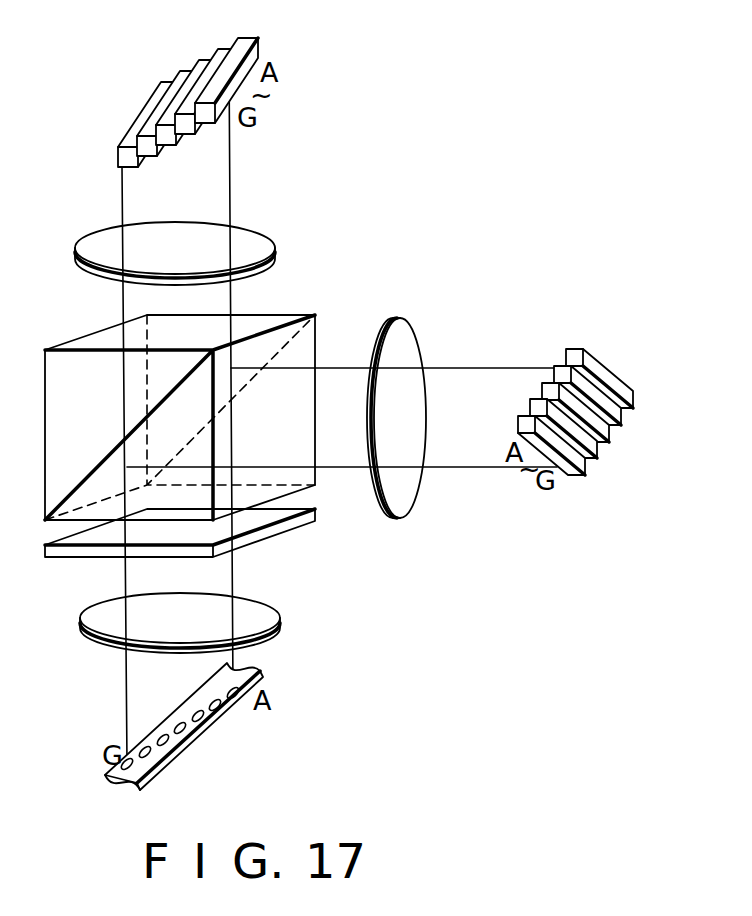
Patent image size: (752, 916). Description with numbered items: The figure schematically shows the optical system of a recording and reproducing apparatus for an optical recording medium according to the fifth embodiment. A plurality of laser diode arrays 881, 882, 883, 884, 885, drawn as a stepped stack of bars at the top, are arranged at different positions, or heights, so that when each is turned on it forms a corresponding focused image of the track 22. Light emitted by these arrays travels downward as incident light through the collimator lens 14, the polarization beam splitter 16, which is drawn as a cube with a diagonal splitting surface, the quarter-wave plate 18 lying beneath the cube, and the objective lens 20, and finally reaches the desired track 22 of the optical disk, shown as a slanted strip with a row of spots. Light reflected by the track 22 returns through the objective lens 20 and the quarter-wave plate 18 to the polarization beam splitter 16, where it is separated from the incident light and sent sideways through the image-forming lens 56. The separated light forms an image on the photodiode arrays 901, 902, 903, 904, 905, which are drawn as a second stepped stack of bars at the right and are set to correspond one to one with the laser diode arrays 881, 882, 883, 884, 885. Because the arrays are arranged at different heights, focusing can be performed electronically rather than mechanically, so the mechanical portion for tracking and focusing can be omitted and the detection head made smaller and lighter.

The collimator lens 14 is at (248, 234).
The polarization beam splitter 16 is at (273, 316).
The λ/4 plate 18 is at (282, 527).
The objective lens 20 is at (263, 618).
The track 22 is at (167, 750).
The image-forming lens 56 is at (405, 328).
The laser diode array 881 is at (253, 36).
The laser diode array 882 is at (215, 50).
The laser diode array 883 is at (197, 58).
The laser diode array 884 is at (178, 72).
The laser diode array 885 is at (145, 100).
The photodiode array 901 is at (581, 349).
The photodiode array 902 is at (623, 418).
The photodiode array 903 is at (610, 437).
The photodiode array 904 is at (600, 457).
The photodiode array 905 is at (582, 471).